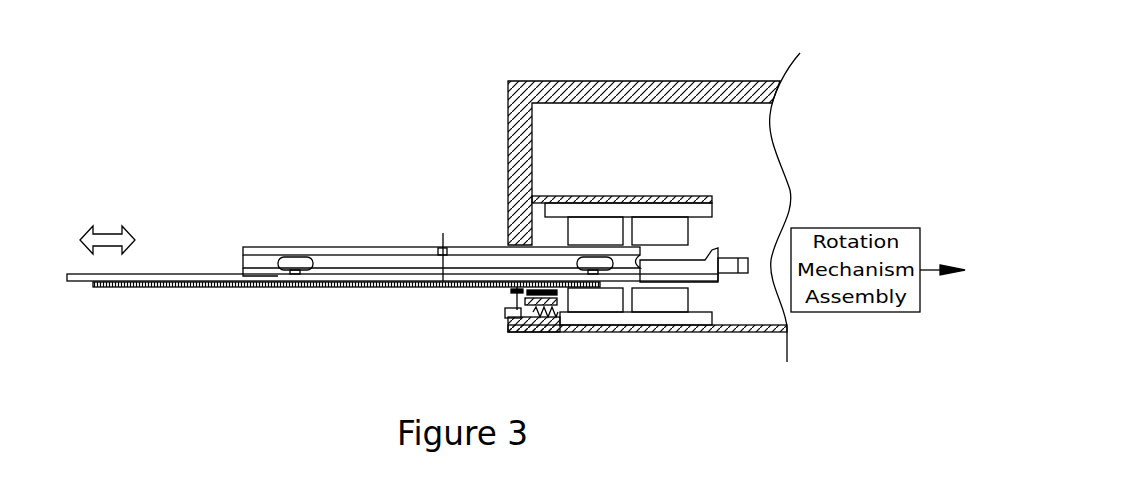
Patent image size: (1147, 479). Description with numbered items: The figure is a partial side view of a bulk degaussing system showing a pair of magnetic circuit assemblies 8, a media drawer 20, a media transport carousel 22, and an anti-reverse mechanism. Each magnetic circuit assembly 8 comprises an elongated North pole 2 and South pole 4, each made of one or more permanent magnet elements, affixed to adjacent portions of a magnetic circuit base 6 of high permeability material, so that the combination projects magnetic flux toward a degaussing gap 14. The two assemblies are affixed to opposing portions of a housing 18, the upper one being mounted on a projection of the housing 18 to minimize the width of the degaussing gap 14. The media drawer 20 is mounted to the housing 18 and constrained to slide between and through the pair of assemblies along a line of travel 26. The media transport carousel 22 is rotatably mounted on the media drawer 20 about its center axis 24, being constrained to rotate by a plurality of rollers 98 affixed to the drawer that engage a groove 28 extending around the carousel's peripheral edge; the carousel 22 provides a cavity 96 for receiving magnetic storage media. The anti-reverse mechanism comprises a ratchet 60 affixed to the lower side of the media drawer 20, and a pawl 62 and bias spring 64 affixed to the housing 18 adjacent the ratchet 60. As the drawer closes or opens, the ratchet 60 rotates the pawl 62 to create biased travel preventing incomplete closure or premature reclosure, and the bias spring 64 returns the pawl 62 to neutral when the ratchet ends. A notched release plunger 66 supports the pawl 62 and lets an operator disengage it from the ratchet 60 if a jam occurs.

The North pole 2 is at (607, 222).
The South pole 4 is at (677, 222).
The magnetic circuit base 6 is at (557, 210).
The magnetic circuit assembly 8 is at (716, 210).
The degaussing gap 14 is at (668, 262).
The housing 18 is at (512, 96).
The media drawer 20 is at (195, 276).
The media transport carousel 22 is at (322, 250).
The center axis 24 is at (443, 235).
The line of travel 26 is at (108, 236).
The groove 28 is at (247, 261).
The ratchet 60 is at (510, 288).
The pawl 62 is at (512, 292).
The bias spring 64 is at (533, 330).
The notched release plunger 66 is at (503, 318).
The cavity 96 is at (380, 240).
The rollers 98 is at (315, 283).